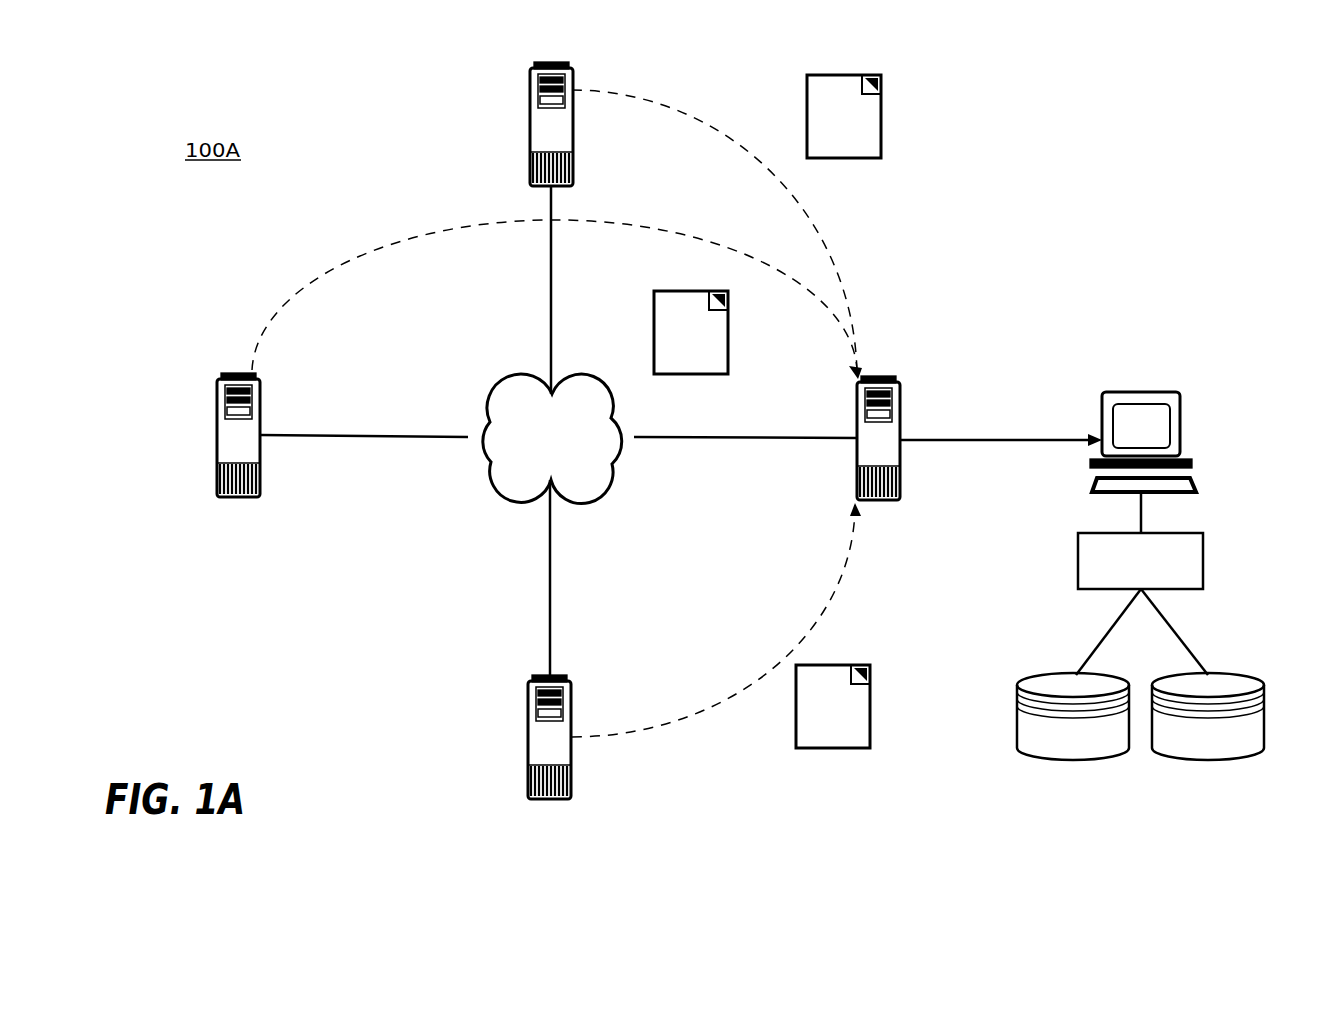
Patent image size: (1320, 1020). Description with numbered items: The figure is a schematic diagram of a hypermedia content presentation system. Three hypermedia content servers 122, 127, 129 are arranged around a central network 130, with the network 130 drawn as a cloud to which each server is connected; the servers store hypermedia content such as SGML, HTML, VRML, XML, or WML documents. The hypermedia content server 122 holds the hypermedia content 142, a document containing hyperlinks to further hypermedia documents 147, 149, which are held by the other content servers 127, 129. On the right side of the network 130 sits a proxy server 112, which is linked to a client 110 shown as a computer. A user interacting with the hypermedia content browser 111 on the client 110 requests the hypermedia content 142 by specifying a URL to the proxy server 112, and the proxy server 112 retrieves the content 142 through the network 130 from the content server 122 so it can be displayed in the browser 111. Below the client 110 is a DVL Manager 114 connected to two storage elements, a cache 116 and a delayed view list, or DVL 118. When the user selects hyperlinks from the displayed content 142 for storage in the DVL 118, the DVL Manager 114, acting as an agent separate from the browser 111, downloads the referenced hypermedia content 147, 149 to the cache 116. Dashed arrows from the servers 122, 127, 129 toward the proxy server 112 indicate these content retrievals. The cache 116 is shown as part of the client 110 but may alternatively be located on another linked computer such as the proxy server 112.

The client 110 is at (1171, 413).
The hypermedia content browser 111 is at (1150, 420).
The proxy server 112 is at (900, 405).
The DVL Manager 114 is at (1203, 563).
The cache 116 is at (1073, 760).
The delayed view list (DVL) 118 is at (1208, 760).
The hypermedia content server 122 is at (528, 708).
The hypermedia content server 127 is at (238, 497).
The hypermedia content server 129 is at (531, 122).
The network 130 is at (490, 470).
The hypermedia content 142 is at (830, 749).
The hypermedia document 147 is at (654, 328).
The hypermedia document 149 is at (881, 113).